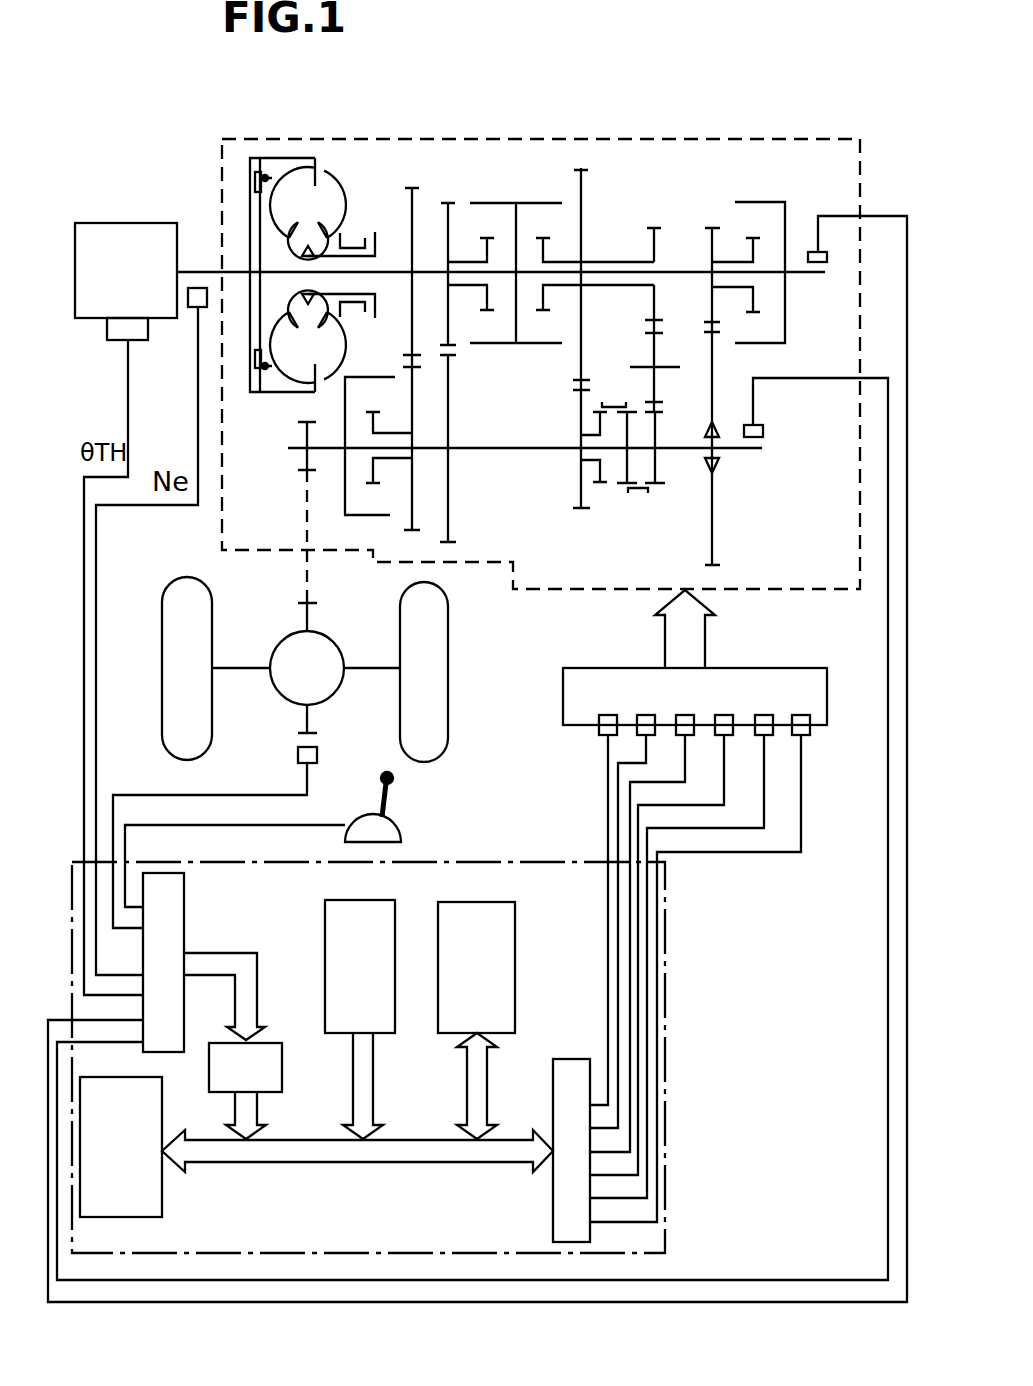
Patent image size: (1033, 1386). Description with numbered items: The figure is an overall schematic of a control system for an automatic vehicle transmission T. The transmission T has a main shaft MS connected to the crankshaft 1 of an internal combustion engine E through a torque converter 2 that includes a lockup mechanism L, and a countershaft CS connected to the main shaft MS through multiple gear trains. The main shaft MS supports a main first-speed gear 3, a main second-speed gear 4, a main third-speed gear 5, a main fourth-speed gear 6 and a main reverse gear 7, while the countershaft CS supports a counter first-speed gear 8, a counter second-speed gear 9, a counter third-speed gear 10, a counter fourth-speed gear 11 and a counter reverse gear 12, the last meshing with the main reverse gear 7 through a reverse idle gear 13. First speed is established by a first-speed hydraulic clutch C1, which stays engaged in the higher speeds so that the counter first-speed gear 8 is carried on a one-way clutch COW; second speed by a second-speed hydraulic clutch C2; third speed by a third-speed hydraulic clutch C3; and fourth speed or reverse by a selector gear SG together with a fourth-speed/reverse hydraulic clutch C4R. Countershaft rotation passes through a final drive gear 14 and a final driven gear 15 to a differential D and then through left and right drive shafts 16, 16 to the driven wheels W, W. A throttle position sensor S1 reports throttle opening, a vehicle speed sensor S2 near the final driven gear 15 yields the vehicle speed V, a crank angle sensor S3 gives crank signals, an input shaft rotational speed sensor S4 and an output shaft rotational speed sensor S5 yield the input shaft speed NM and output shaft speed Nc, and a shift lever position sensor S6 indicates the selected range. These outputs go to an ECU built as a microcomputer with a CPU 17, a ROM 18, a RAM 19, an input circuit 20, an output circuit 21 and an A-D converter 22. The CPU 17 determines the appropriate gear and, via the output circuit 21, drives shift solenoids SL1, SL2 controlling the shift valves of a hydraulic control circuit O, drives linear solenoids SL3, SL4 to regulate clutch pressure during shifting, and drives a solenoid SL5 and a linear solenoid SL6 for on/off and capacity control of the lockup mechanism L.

The crankshaft 1 is at (185, 270).
The torque converter 2 is at (320, 166).
The main first-speed gear 3 is at (712, 227).
The main second-speed gear 4 is at (448, 202).
The main third-speed gear 5 is at (406, 186).
The main fourth-speed gear 6 is at (582, 169).
The main reverse gear 7 is at (653, 227).
The counter first-speed gear 8 is at (720, 565).
The counter second-speed gear 9 is at (455, 548).
The counter third-speed gear 10 is at (413, 531).
The counter fourth-speed gear 11 is at (581, 510).
The counter reverse gear 12 is at (660, 486).
The reverse idle gear 13 is at (649, 333).
The final drive gear 14 is at (298, 456).
The final driven gear 15 is at (298, 603).
The drive shaft 16 is at (229, 667).
The CPU 17 is at (162, 1110).
The ROM 18 is at (325, 956).
The RAM 19 is at (516, 941).
The input circuit 20 is at (185, 916).
The output circuit 21 is at (553, 1206).
The A-D converter 22 is at (282, 1062).
The internal combustion engine E is at (121, 223).
The automatic vehicle transmission T is at (650, 139).
The lockup mechanism L is at (256, 163).
The first-speed hydraulic clutch C1 is at (760, 202).
The second-speed hydraulic clutch C2 is at (480, 203).
The third-speed hydraulic clutch C3 is at (376, 517).
The fourth-speed/reverse hydraulic clutch C4R is at (528, 203).
The main shaft MS is at (810, 274).
The countershaft CS is at (758, 450).
The one-way clutch COW is at (720, 470).
The selector gear SG is at (636, 493).
The differential D is at (331, 646).
The driven wheel W is at (172, 621).
The throttle position sensor S1 is at (132, 338).
The vehicle speed sensor S2 is at (318, 755).
The crank angle sensor S3 is at (197, 305).
The input shaft rotational speed sensor S4 is at (813, 251).
The output shaft rotational speed sensor S5 is at (749, 425).
The shift lever position sensor S6 is at (386, 841).
The rotational speed of the transmission input shaft NM is at (477, 740).
The rotational speed of the transmission output shaft Nc is at (472, 813).
The vehicle speed V is at (210, 845).
The hydraulic control circuit O is at (827, 705).
The shift solenoid SL1 is at (676, 734).
The shift solenoid SL2 is at (726, 736).
The linear solenoid SL3 is at (598, 735).
The linear solenoid SL4 is at (637, 734).
The solenoid SL5 is at (768, 736).
The linear solenoid SL6 is at (802, 736).
The electronic control unit ECU is at (668, 972).